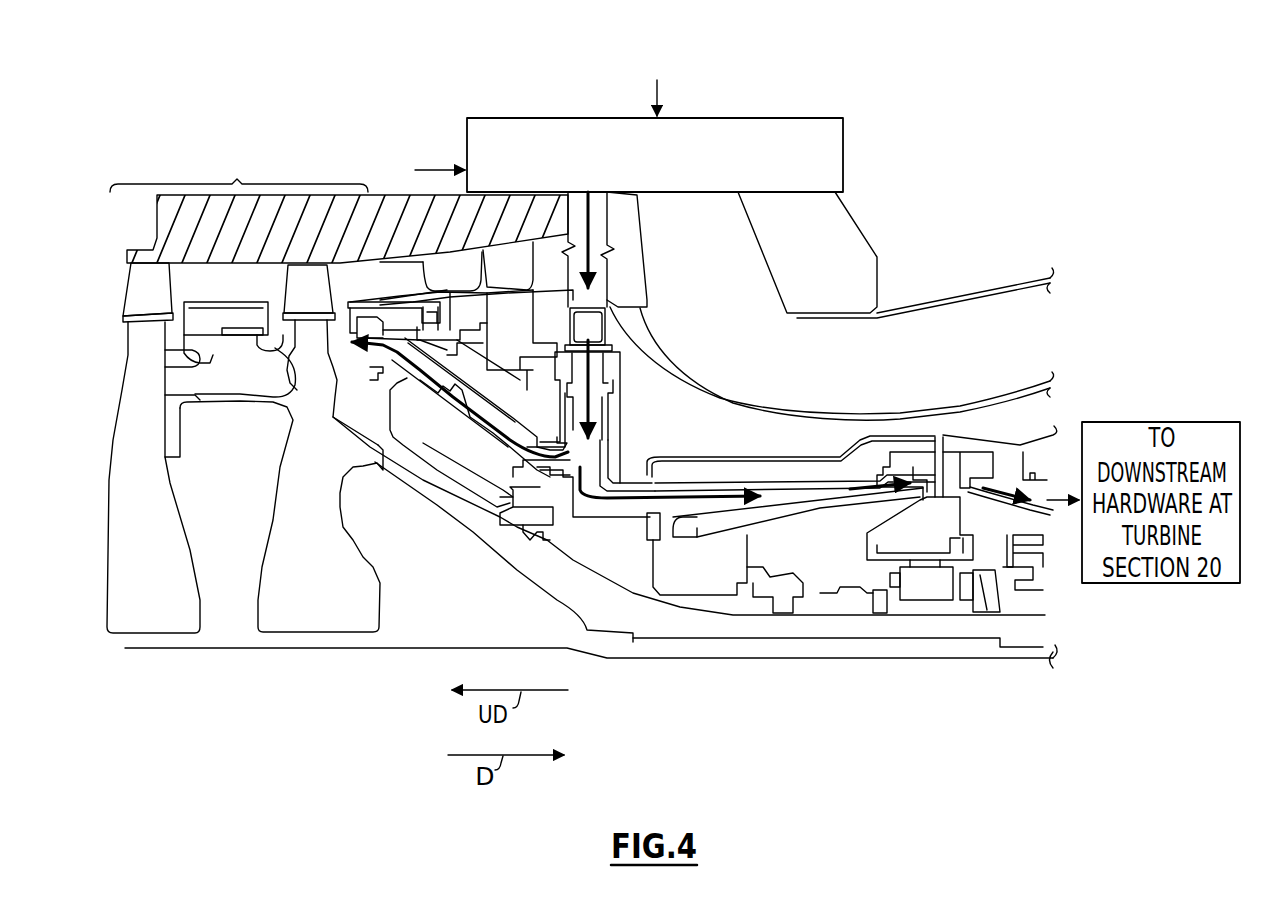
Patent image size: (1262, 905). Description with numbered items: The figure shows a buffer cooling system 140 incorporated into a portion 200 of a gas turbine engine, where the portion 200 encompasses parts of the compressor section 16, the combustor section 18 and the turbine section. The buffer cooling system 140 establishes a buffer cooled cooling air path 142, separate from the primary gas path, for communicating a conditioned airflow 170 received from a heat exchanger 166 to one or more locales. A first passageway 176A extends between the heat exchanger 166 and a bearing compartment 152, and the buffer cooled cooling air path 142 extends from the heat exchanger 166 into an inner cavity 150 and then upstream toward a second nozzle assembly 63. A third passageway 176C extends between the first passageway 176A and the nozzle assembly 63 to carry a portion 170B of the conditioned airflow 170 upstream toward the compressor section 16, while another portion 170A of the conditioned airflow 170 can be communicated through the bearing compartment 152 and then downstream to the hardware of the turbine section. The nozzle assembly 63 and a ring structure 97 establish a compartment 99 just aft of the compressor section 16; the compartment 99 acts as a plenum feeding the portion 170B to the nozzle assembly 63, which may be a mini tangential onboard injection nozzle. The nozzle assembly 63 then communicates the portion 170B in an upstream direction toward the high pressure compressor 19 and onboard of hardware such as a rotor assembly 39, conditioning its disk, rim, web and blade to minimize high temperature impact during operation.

The compressor section 16 is at (104, 272).
The combustor section 18 is at (938, 236).
The high pressure compressor 19 is at (349, 210).
The rotor assembly 39 is at (279, 350).
The second nozzle assembly 63 is at (361, 356).
The ring structure 97 is at (423, 493).
The compartment 99 is at (423, 493).
The buffer cooling system 140 is at (794, 100).
The buffer cooled cooling air path 142 is at (600, 406).
The inner cavity 150 is at (681, 424).
The bearing compartment 152 is at (798, 557).
The heat exchanger 166 is at (843, 157).
The conditioned airflow 170 is at (607, 253).
The portion of the conditioned airflow 170A is at (686, 502).
The portion of the conditioned airflow 170B is at (470, 412).
The first passageway 176A is at (618, 368).
The third passageway 176C is at (493, 447).
The portion of the gas turbine engine 200 is at (700, 268).